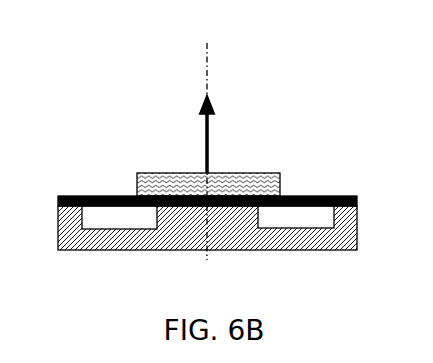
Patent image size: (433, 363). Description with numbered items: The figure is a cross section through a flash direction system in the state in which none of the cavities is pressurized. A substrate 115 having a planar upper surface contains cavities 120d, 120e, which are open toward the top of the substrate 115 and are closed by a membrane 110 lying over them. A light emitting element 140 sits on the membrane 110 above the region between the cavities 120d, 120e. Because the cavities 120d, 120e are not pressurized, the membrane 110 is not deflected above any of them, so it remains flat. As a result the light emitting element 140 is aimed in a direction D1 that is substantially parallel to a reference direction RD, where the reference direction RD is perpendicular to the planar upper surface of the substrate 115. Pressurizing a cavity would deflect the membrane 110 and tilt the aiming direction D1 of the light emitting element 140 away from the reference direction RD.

The membrane 110 is at (67, 197).
The substrate 115 is at (352, 250).
The cavity 120d is at (107, 226).
The cavity 120e is at (294, 226).
The light emitting element 140 is at (148, 172).
The direction D1 is at (226, 134).
The reference direction RD is at (207, 140).